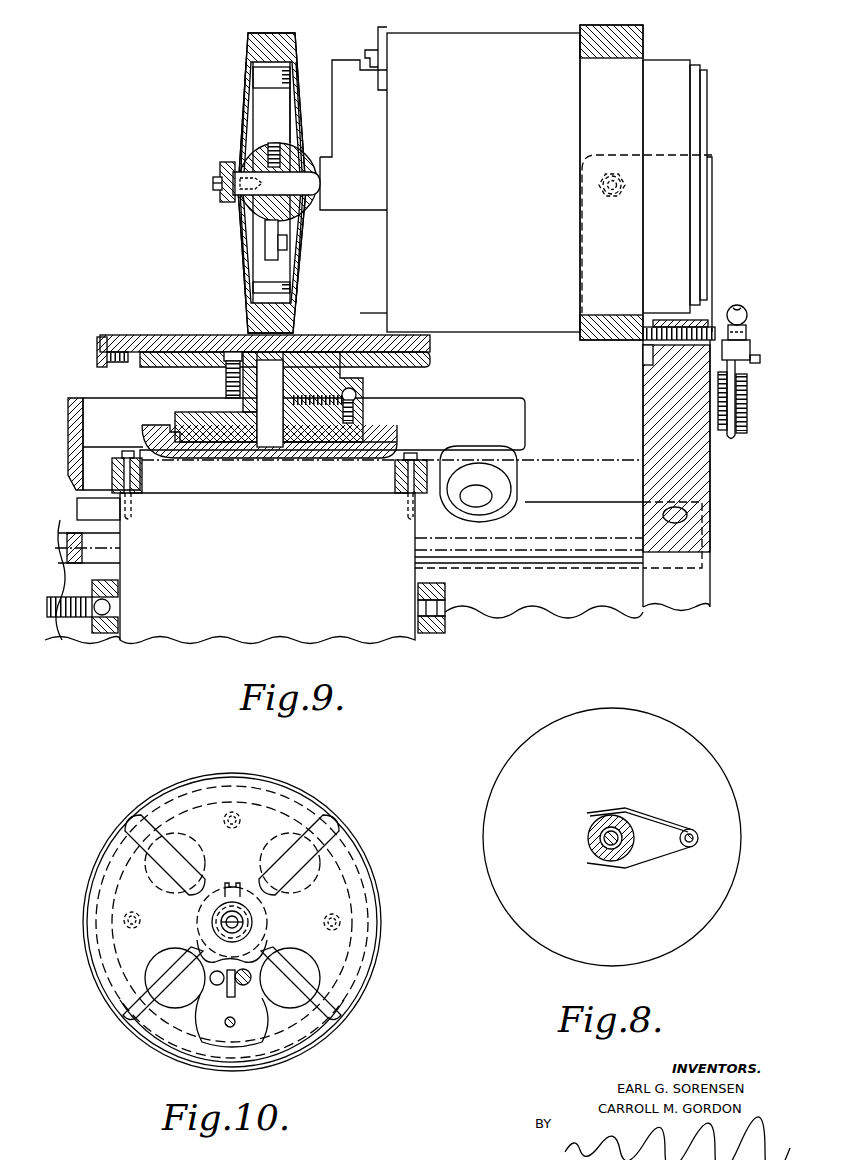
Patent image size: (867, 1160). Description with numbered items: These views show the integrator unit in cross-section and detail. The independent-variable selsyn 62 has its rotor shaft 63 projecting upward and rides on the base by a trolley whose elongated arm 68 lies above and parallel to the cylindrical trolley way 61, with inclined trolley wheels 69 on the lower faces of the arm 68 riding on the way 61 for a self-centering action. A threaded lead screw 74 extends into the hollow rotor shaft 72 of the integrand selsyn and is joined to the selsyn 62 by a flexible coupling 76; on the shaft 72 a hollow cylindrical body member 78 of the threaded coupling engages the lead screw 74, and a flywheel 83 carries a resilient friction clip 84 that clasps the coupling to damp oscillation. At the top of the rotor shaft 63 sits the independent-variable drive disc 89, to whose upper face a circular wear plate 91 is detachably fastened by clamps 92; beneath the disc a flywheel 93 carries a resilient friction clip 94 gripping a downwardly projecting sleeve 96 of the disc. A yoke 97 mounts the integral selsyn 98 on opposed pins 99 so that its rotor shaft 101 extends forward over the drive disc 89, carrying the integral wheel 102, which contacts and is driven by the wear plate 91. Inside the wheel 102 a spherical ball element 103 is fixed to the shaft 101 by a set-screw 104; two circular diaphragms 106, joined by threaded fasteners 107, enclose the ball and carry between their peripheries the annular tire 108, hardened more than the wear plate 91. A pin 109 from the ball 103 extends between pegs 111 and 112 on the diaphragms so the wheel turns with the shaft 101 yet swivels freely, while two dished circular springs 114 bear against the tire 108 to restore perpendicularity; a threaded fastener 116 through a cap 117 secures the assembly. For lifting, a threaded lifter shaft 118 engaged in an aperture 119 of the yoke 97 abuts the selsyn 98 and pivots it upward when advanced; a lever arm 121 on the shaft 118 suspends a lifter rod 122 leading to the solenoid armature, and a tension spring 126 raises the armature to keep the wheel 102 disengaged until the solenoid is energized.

In FIG. 9, the cylindrical trolley way 61 is at (560, 565).
In FIG. 9, the independent-variable selsyn 62 is at (254, 604).
In FIG. 9, the rotor shaft 63 is at (262, 440).
In FIG. 9, the elongated arm 68 is at (515, 420).
In FIG. 9, the trolley wheel 69 is at (512, 502).
In FIG. 8, the rotor shaft 72 is at (600, 835).
In FIG. 9, the lead screw 74 is at (50, 612).
In FIG. 8, the lead screw 74 is at (595, 845).
In FIG. 9, the flexible coupling 76 is at (103, 615).
In FIG. 8, the hollow cylindrical body member 78 is at (632, 825).
In FIG. 8, the flywheel 83 is at (520, 785).
In FIG. 8, the resilient friction clip 84 is at (672, 848).
In FIG. 9, the independent-variable drive disc 89 is at (432, 360).
In FIG. 9, the circular wear plate 91 is at (135, 335).
In FIG. 9, the clamps 92 is at (97, 345).
In FIG. 9, the flywheel 93 is at (360, 420).
In FIG. 9, the resilient friction clip 94 is at (340, 392).
In FIG. 9, the sleeve 96 is at (225, 390).
In FIG. 9, the yoke 97 is at (710, 480).
In FIG. 9, the integral selsyn 98 is at (473, 174).
In FIG. 9, the pins 99 is at (620, 190).
In FIG. 9, the rotor shaft 101 is at (320, 160).
In FIG. 9, the integral wheel 102 is at (150, 132).
In FIG. 10, the integral wheel 102 is at (125, 798).
In FIG. 9, the spherical ball element 103 is at (240, 212).
In FIG. 9, the set-screw 104 is at (265, 150).
In FIG. 10, the set-screw 104 is at (231, 965).
In FIG. 9, the circular diaphragms 106 is at (287, 95).
In FIG. 9, the threaded fasteners 107 is at (290, 82).
In FIG. 10, the threaded fasteners 107 is at (236, 826).
In FIG. 9, the annular tire 108 is at (248, 33).
In FIG. 10, the annular tire 108 is at (128, 1033).
In FIG. 9, the pin 109 is at (268, 252).
In FIG. 9, the peg 111 is at (263, 238).
In FIG. 10, the peg 111 is at (217, 985).
In FIG. 10, the peg 112 is at (250, 970).
In FIG. 9, the dished circular springs 114 is at (293, 68).
In FIG. 10, the dished circular springs 114 is at (300, 815).
In FIG. 9, the threaded fastener 116 is at (214, 185).
In FIG. 10, the threaded fastener 116 is at (245, 922).
In FIG. 9, the cap 117 is at (220, 168).
In FIG. 10, the cap 117 is at (210, 922).
In FIG. 9, the lifter shaft 118 is at (713, 325).
In FIG. 9, the aperture 119 is at (655, 345).
In FIG. 9, the lever arm 121 is at (747, 320).
In FIG. 9, the lifter rod 122 is at (735, 437).
In FIG. 9, the tension spring 126 is at (748, 393).